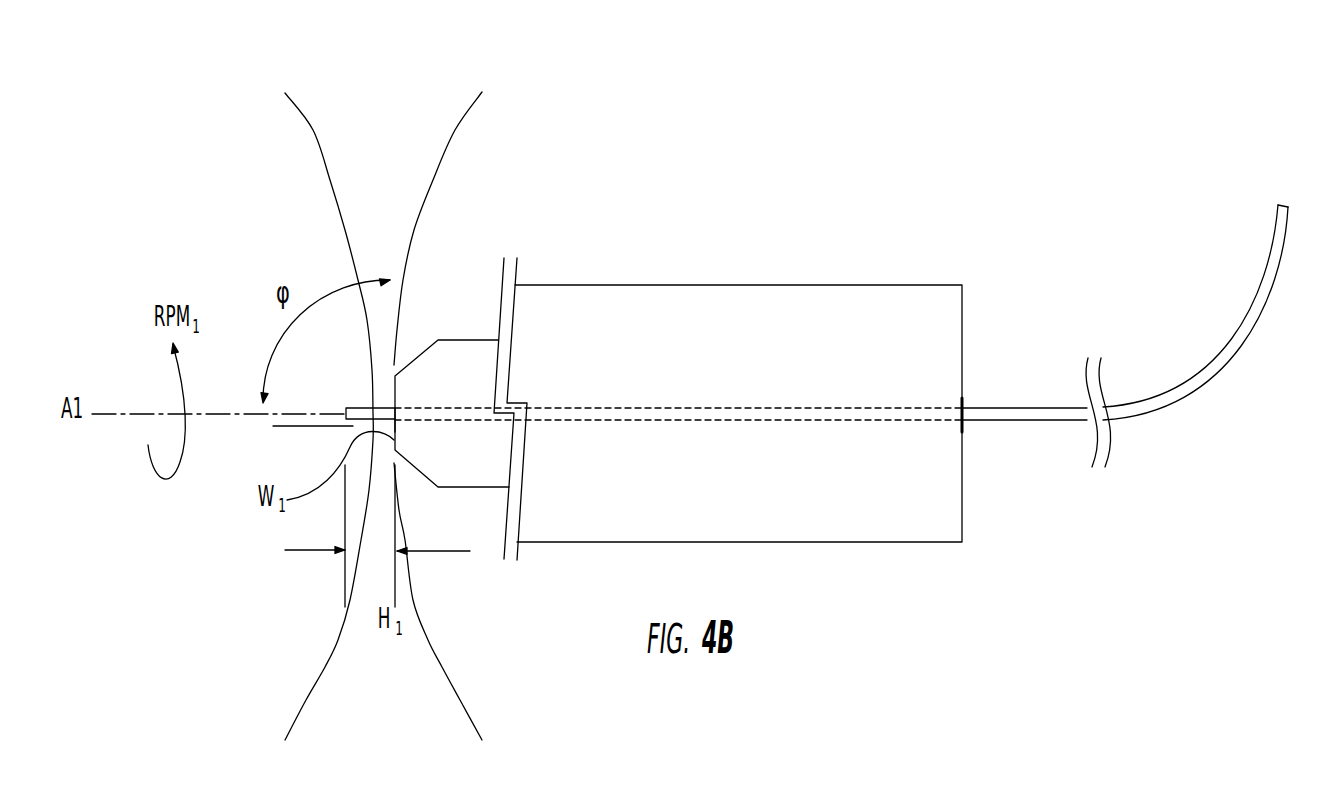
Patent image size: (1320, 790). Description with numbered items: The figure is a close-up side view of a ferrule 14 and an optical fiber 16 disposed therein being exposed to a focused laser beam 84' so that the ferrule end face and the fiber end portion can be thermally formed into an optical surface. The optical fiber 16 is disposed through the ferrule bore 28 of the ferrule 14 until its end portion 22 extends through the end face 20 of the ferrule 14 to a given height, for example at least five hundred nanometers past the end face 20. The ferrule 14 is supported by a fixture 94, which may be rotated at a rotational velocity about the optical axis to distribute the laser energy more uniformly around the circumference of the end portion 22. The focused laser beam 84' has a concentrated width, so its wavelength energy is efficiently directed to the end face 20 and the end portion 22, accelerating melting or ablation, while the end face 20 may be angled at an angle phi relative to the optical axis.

The focused laser beam 84' is at (383, 370).
The fixture 94 is at (720, 285).
The ferrule 14 is at (462, 340).
The optical fiber 16 is at (477, 407).
The end portion 22 is at (360, 403).
The end face 20 is at (367, 425).
The ferrule bore 28 is at (400, 425).